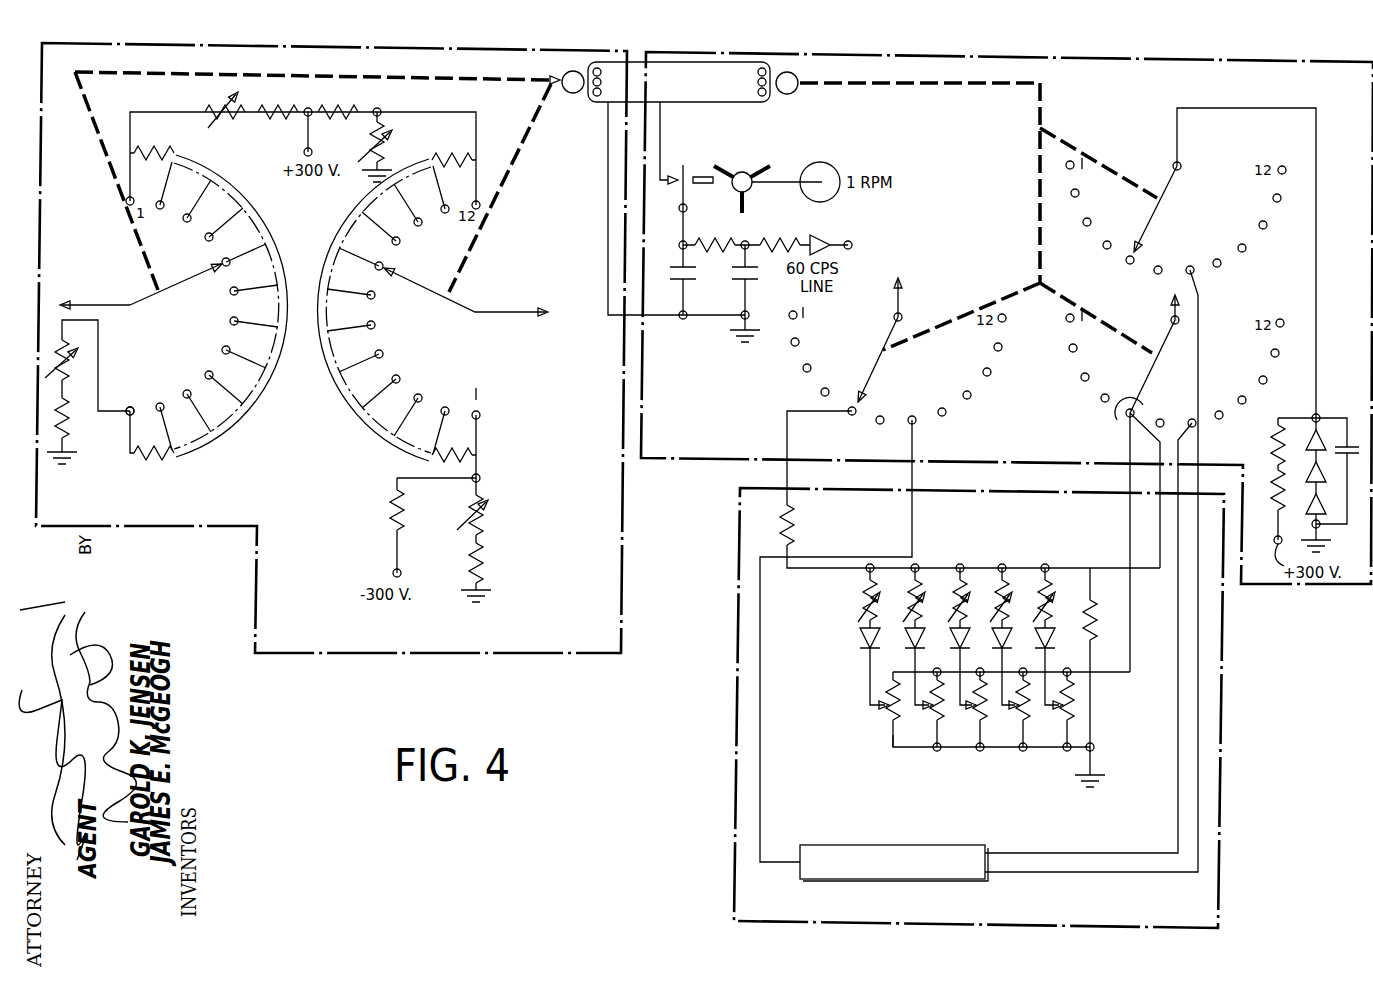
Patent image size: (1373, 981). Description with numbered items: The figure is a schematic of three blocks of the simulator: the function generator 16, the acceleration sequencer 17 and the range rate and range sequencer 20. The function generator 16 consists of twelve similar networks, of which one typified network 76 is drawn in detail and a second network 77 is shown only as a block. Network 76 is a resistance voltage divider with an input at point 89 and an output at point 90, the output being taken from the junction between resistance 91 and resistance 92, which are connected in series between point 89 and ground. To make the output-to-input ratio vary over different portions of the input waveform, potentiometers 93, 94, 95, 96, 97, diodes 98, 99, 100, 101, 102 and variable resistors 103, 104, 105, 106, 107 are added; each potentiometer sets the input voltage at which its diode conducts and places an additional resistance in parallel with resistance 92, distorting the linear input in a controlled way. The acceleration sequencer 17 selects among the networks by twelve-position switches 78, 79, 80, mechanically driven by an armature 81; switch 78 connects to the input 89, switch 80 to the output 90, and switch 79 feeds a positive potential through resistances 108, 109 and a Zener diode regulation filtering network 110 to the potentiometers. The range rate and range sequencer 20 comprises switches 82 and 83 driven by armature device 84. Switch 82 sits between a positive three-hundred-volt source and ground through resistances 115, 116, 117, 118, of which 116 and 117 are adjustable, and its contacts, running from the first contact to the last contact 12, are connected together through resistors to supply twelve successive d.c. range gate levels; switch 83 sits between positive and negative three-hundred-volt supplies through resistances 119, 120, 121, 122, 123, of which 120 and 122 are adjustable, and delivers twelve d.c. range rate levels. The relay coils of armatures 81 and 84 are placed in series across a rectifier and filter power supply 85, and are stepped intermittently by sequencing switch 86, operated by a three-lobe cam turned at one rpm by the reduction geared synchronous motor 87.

The switch contact 12 is at (127, 401).
The function generator 16 is at (740, 660).
The acceleration sequencer 17 is at (700, 458).
The range rate and range sequencer 20 is at (622, 590).
The function network 76 is at (960, 781).
The additional network 77 is at (918, 844).
The selector switch 78 is at (905, 318).
The selector switch 79 is at (1155, 215).
The selector switch 80 is at (1178, 312).
The armature 81 is at (795, 73).
The switch 82 is at (213, 272).
The switch 83 is at (432, 292).
The armature device 84 is at (568, 70).
The power supply 85 is at (722, 297).
The sequencing switch 86 is at (686, 170).
The synchronous motor 87 is at (820, 164).
The input point 89 is at (840, 402).
The output point 90 is at (1118, 420).
The resistance 91 is at (790, 540).
The resistance 92 is at (1093, 636).
The potentiometer 93 is at (886, 702).
The potentiometer 94 is at (929, 702).
The potentiometer 95 is at (972, 702).
The potentiometer 96 is at (1015, 702).
The potentiometer 97 is at (1059, 702).
The diode 98 is at (858, 640).
The diode 99 is at (903, 640).
The diode 100 is at (948, 640).
The diode 101 is at (990, 640).
The diode 102 is at (1033, 640).
The variable resistor 103 is at (858, 608).
The variable resistor 104 is at (905, 606).
The variable resistor 105 is at (950, 606).
The variable resistor 106 is at (992, 606).
The variable resistor 107 is at (1035, 606).
The resistance 108 is at (1266, 452).
The resistance 109 is at (1266, 498).
The Zener diode regulation filtering network 110 is at (1362, 551).
The resistance 115 is at (296, 118).
The adjustable resistance 116 is at (238, 118).
The adjustable resistance 117 is at (66, 362).
The resistance 118 is at (66, 414).
The resistance 119 is at (356, 118).
The adjustable resistance 120 is at (388, 150).
The resistance 121 is at (392, 518).
The adjustable resistance 122 is at (482, 526).
The resistance 123 is at (482, 578).